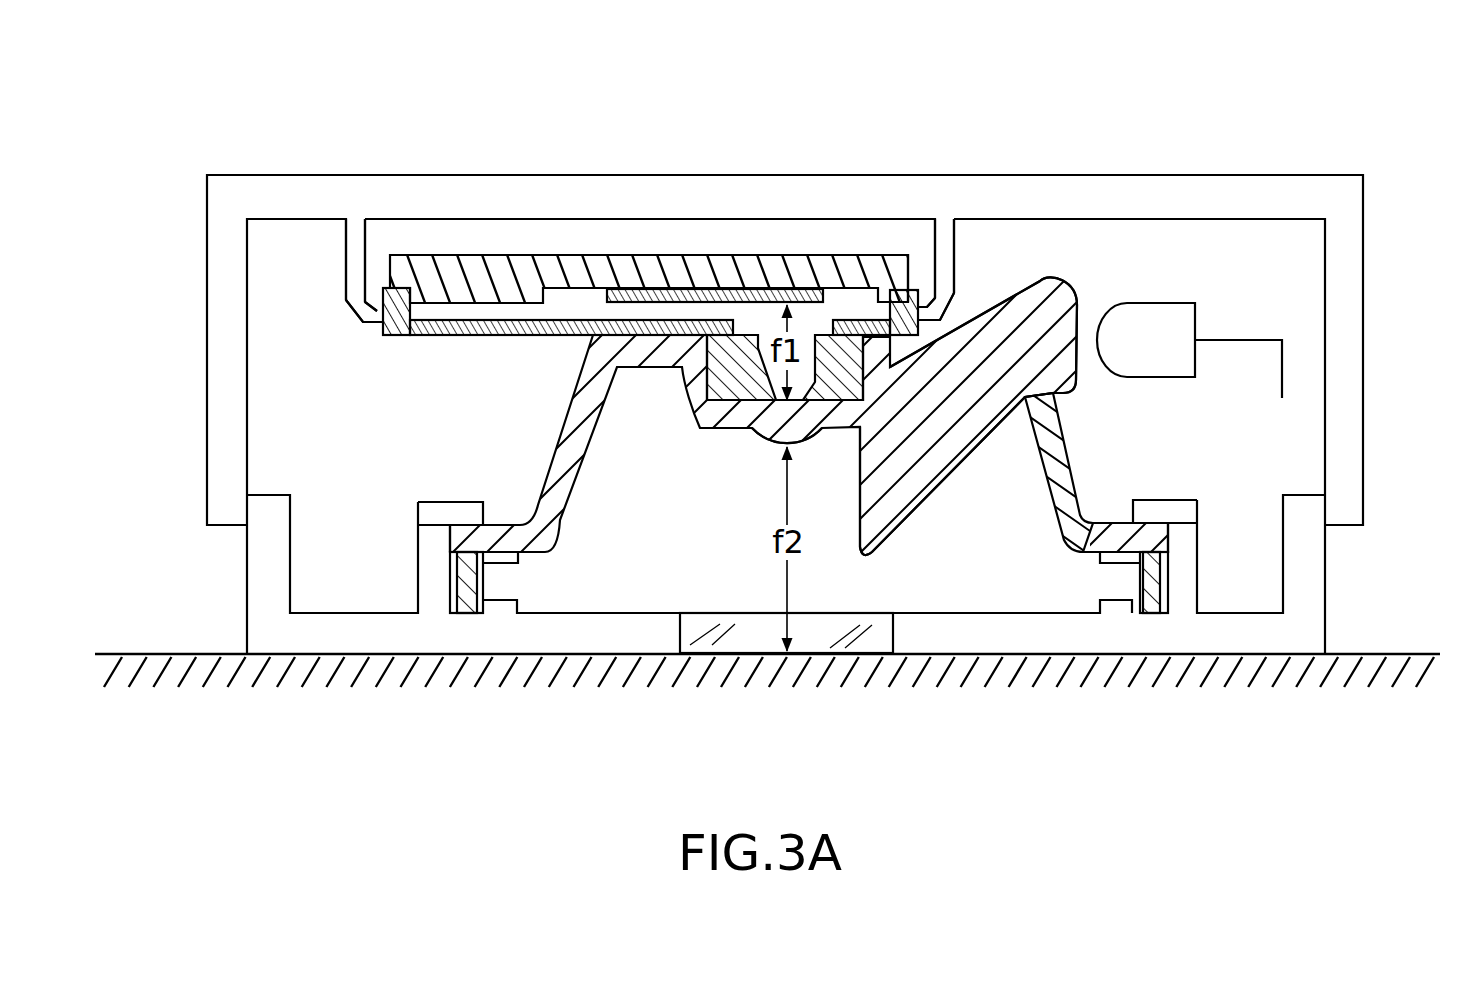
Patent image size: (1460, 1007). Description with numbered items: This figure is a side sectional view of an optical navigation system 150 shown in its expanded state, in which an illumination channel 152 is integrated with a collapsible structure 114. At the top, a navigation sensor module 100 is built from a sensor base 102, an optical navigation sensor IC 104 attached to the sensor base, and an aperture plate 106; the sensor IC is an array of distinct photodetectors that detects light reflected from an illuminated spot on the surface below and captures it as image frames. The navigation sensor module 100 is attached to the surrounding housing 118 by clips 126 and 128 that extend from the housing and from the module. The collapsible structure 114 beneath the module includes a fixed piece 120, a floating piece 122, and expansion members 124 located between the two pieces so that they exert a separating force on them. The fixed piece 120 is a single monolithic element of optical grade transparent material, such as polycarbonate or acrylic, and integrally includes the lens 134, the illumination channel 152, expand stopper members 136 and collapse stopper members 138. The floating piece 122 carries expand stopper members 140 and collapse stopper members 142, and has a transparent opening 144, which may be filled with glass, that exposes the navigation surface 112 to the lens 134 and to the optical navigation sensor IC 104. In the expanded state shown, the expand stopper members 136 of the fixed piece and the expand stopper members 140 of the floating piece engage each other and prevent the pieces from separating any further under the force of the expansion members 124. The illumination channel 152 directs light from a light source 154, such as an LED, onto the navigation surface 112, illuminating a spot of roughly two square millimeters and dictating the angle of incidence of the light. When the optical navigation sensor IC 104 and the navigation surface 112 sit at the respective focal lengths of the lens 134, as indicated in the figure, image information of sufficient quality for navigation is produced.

The navigation sensor module 100 is at (845, 245).
The sensor base 102 is at (668, 255).
The optical navigation sensor IC 104 is at (607, 298).
The aperture plate 106 is at (392, 334).
The navigation surface 112 is at (185, 650).
The collapsible structure 114 is at (461, 435).
The housing 118 is at (1366, 264).
The fixed piece 120 is at (577, 398).
The floating piece 122 is at (373, 613).
The expansion members 124 is at (478, 590).
The clip 126 is at (345, 300).
The clip 128 is at (378, 292).
The lens 134 is at (765, 437).
The expand stopper members 136 is at (457, 542).
The collapse stopper members 138 is at (486, 566).
The expand stopper members 140 is at (465, 512).
The collapse stopper members 142 is at (508, 600).
The transparent opening 144 is at (733, 643).
The optical navigation system 150 is at (1212, 70).
The illumination channel 152 is at (911, 526).
The light source 154 is at (1189, 350).